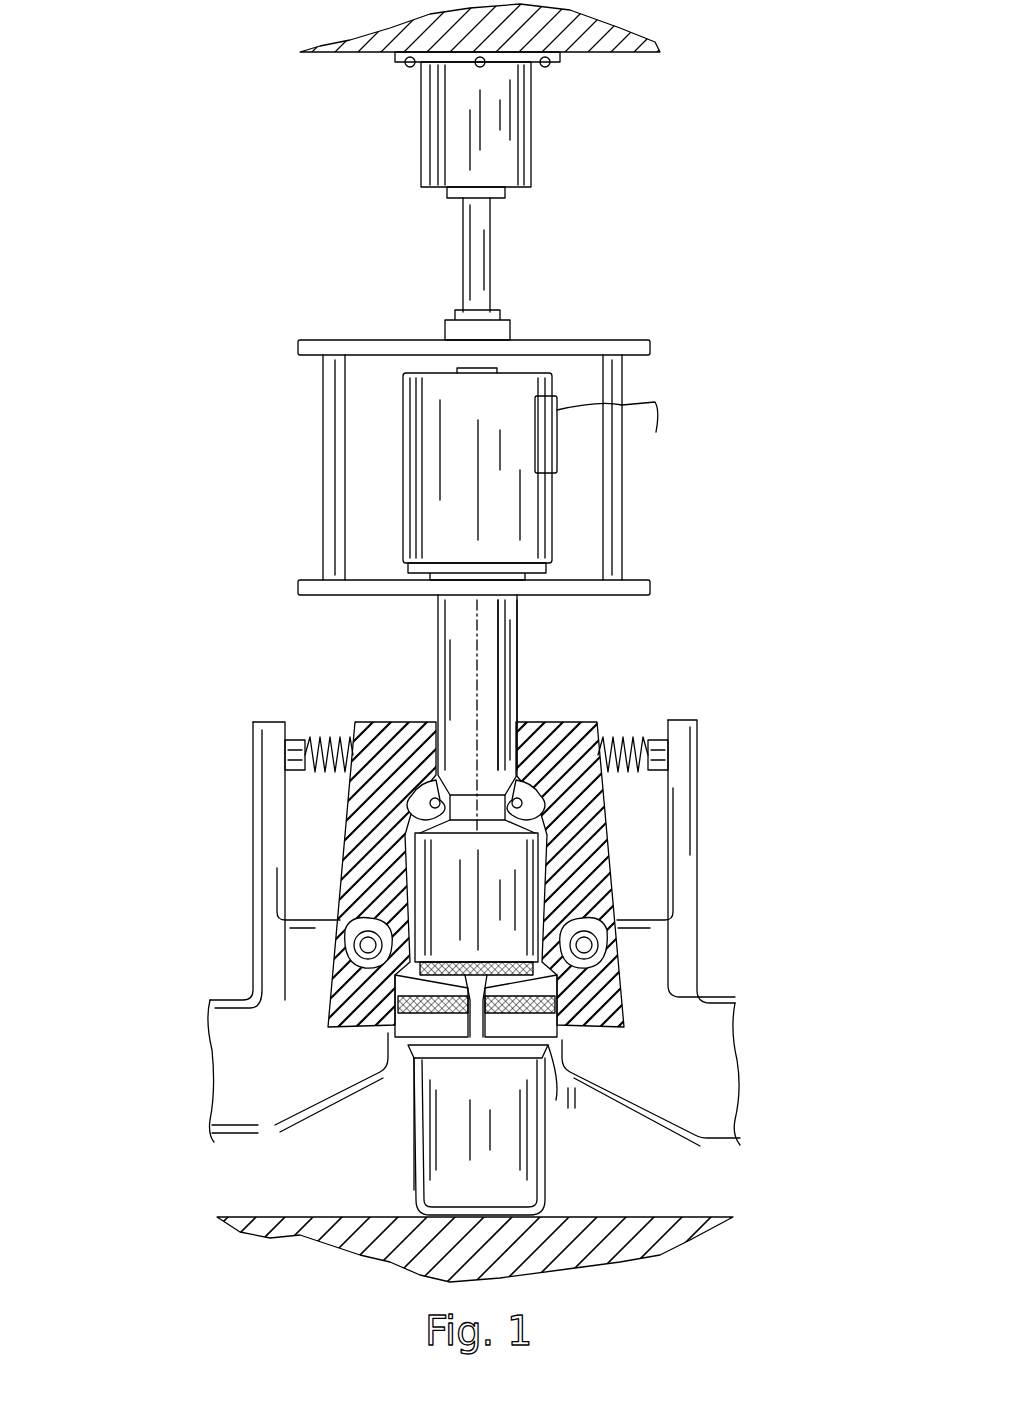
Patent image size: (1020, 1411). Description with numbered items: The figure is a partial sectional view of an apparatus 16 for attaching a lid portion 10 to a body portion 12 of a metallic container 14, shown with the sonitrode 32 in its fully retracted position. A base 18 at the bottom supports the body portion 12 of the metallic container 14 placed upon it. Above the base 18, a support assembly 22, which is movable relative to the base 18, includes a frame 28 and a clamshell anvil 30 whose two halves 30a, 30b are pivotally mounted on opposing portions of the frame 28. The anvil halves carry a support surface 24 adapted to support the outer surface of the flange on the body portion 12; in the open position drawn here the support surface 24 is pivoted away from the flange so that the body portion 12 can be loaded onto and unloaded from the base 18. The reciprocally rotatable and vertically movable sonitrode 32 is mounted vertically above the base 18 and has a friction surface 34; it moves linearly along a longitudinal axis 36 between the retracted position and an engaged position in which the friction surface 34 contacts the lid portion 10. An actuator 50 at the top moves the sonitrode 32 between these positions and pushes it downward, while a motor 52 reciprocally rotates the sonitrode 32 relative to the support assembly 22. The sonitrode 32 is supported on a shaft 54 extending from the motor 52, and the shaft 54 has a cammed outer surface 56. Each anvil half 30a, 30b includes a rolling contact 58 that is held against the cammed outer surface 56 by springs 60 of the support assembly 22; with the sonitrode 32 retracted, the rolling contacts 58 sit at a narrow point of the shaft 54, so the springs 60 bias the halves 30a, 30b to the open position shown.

The lid portion 10 is at (468, 1130).
The body portion 12 is at (540, 1148).
The metallic container 14 is at (410, 1186).
The apparatus 16 is at (297, 1280).
The base 18 is at (555, 1250).
The support assembly 22 is at (702, 908).
The support surface 24 is at (545, 1035).
The frame 28 is at (697, 967).
The clamshell anvil 30 is at (491, 854).
The clamshell anvil half 30a is at (593, 876).
The clamshell anvil half 30b is at (375, 862).
The sonitrode 32 is at (445, 914).
The friction surface 34 is at (327, 1025).
The longitudinal axis 36 is at (477, 645).
The actuator 50 is at (497, 150).
The motor 52 is at (445, 523).
The shaft 54 is at (497, 630).
The cammed outer surface 56 is at (515, 658).
The rolling contact 58 is at (425, 818).
The springs 60 is at (357, 772).